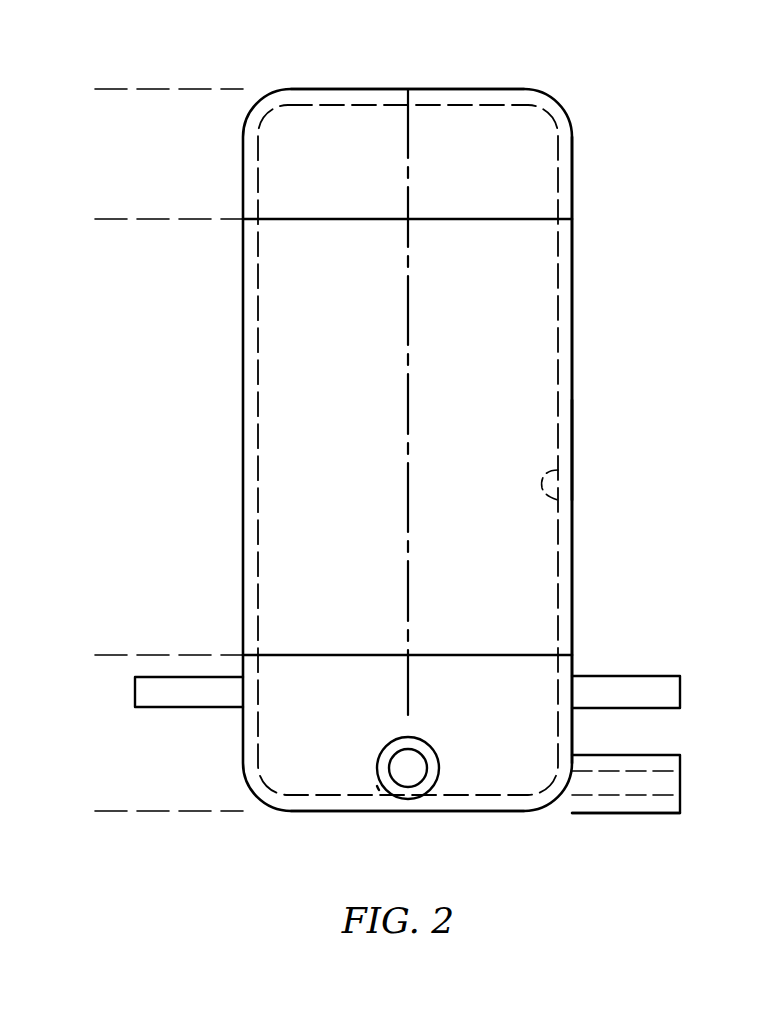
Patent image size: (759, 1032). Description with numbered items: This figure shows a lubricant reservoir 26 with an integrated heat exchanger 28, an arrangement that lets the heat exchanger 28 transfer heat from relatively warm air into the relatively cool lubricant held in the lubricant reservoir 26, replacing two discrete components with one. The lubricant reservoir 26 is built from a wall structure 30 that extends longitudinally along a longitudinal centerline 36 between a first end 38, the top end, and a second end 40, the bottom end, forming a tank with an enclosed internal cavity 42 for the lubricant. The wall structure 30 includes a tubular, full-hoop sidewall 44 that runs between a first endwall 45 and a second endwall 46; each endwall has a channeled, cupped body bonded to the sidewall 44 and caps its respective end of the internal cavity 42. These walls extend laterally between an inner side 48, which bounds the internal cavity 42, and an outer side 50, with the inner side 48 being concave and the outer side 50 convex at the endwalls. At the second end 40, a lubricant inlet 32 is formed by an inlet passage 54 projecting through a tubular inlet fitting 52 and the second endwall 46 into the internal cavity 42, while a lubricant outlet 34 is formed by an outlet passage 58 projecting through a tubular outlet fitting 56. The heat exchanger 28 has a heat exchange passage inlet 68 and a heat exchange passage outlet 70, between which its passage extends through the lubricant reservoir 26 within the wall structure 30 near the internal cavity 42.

The lubricant reservoir 26 is at (566, 95).
The heat exchanger 28 is at (587, 662).
The wall structure 30 is at (578, 300).
The lubricant inlet 32 is at (625, 814).
The lubricant outlet 34 is at (378, 784).
The longitudinal centerline 36 is at (408, 135).
The first end 38 is at (375, 89).
The second end 40 is at (303, 812).
The internal cavity 42 is at (557, 402).
The sidewall 44 is at (95, 219).
The first endwall 45 is at (95, 89).
The second endwall 46 is at (95, 655).
The inner side 48 is at (558, 500).
The outer side 50 is at (573, 448).
The inlet fitting 52 is at (655, 755).
The inlet passage 54 is at (655, 782).
The outlet fitting 56 is at (437, 770).
The outlet passage 58 is at (406, 778).
The heat exchange passage inlet 68 is at (178, 708).
The heat exchange passage outlet 70 is at (658, 676).